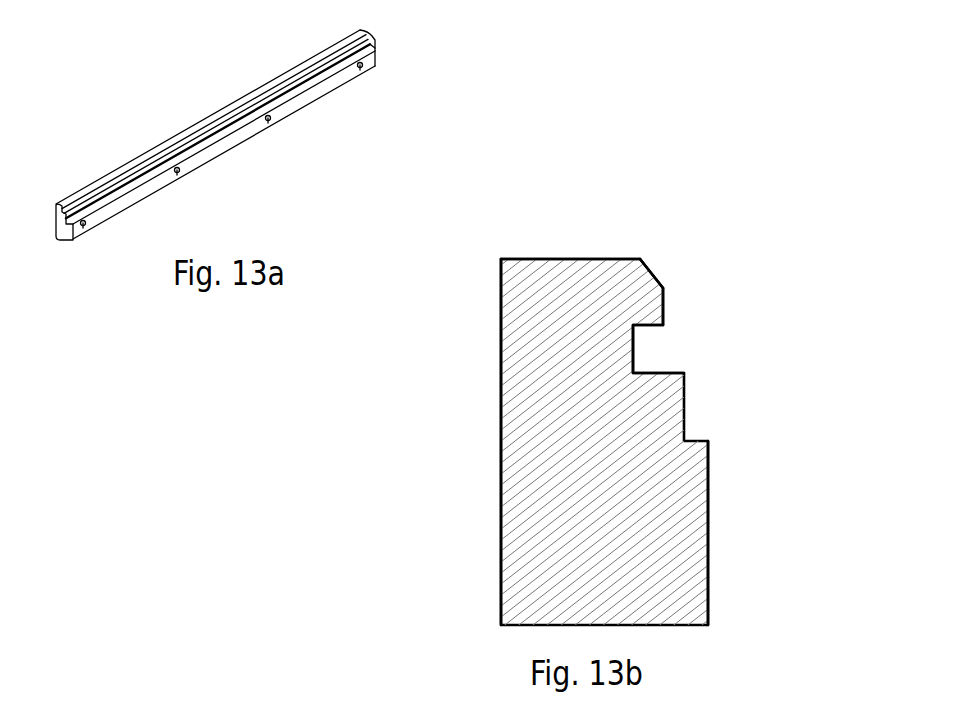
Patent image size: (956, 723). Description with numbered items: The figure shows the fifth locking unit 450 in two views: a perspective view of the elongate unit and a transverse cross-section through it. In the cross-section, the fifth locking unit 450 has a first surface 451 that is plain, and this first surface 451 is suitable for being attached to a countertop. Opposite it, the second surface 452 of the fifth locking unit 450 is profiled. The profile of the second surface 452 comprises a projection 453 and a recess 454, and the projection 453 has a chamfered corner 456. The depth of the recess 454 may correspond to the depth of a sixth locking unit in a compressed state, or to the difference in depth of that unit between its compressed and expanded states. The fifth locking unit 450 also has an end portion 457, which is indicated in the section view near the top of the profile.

In FIG. 13A, the fifth locking unit 450 is at (288, 92).
In FIG. 13B, the fifth locking unit 450 is at (555, 543).
In FIG. 13B, the first surface 451 is at (495, 444).
In FIG. 13B, the second surface 452 is at (702, 568).
In FIG. 13B, the projection 453 is at (639, 308).
In FIG. 13B, the recess 454 is at (628, 350).
In FIG. 13B, the chamfered corner 456 is at (646, 275).
In FIG. 13B, the end portion 457 is at (560, 327).